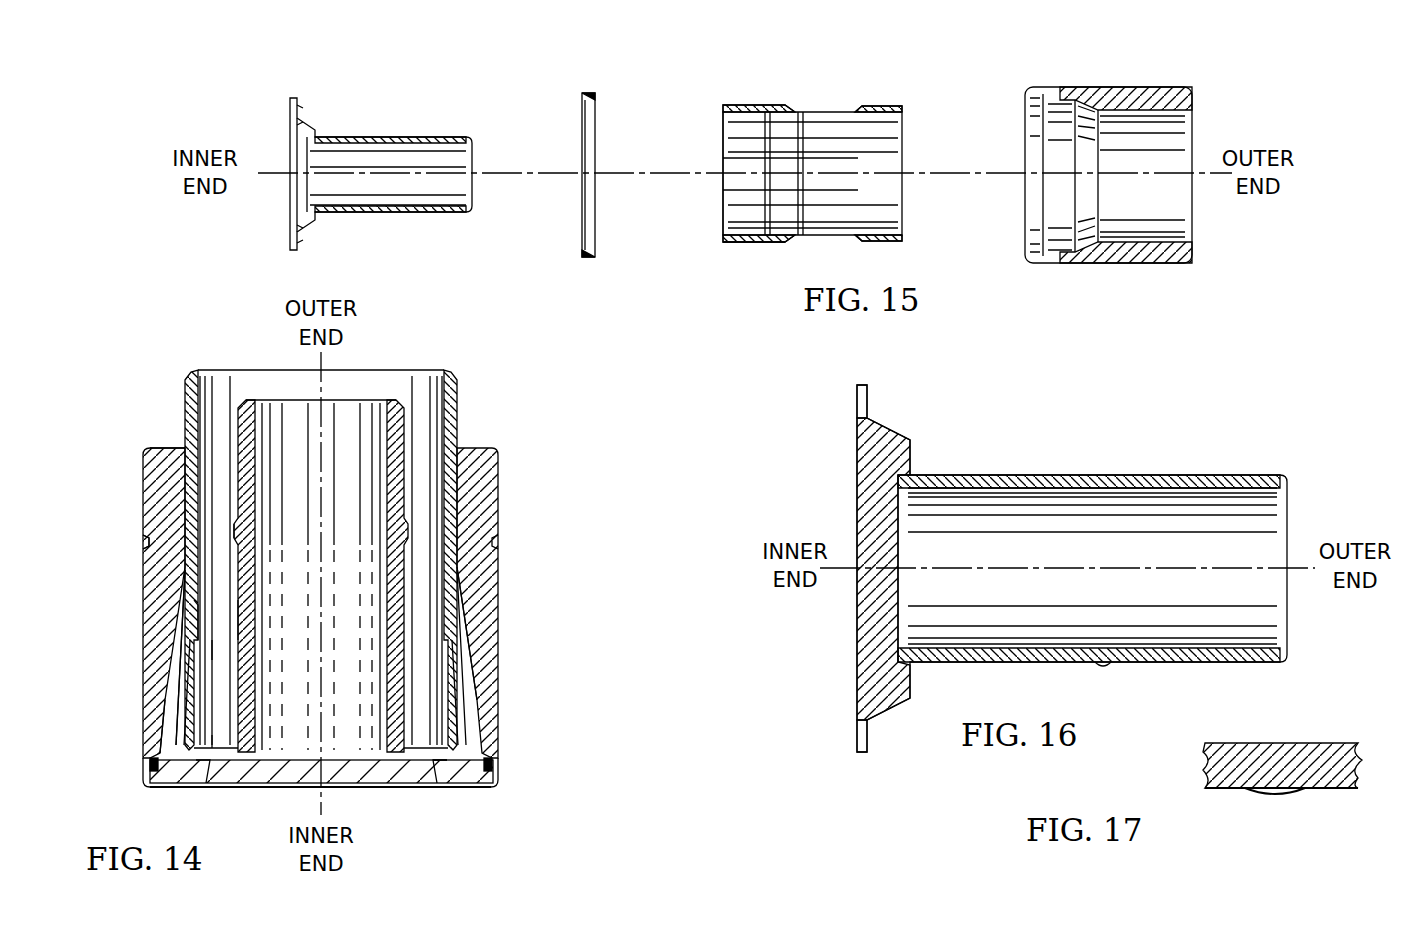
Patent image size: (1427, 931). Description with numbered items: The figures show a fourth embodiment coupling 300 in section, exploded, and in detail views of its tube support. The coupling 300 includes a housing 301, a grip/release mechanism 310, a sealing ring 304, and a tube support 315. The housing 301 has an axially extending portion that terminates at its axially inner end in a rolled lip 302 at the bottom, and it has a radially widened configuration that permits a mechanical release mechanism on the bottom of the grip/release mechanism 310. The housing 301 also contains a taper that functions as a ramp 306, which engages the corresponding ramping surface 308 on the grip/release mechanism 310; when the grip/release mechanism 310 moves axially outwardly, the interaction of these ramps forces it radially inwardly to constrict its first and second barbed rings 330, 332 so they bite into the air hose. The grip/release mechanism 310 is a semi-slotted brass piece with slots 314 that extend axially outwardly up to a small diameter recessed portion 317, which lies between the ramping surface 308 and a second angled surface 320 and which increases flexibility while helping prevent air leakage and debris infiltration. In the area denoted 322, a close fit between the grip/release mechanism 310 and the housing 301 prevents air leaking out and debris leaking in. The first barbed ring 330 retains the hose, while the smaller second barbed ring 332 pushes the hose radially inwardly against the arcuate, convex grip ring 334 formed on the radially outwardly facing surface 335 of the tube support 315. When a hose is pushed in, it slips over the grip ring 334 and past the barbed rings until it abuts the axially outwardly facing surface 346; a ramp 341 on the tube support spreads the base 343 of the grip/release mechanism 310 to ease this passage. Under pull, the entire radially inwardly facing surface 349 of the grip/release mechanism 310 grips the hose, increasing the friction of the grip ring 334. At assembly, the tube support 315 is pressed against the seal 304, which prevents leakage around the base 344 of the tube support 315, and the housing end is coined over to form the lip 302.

In FIG. 14, the coupling 300 is at (578, 333).
In FIG. 14, the housing 301 is at (484, 453).
In FIG. 15, the housing 301 is at (1128, 283).
In FIG. 14, the rolled lip 302 is at (495, 790).
In FIG. 14, the sealing ring 304 is at (502, 770).
In FIG. 15, the sealing ring 304 is at (590, 95).
In FIG. 14, the ramp 306 is at (170, 665).
In FIG. 14, the ramping surface 308 is at (200, 618).
In FIG. 14, the grip/release mechanism 310 is at (186, 395).
In FIG. 15, the grip/release mechanism 310 is at (878, 76).
In FIG. 15, the slots 314 is at (722, 185).
In FIG. 14, the tube support 315 is at (392, 470).
In FIG. 15, the tube support 315 is at (434, 126).
In FIG. 16, the tube support 315 is at (1239, 456).
In FIG. 14, the recessed portion 317 is at (202, 577).
In FIG. 15, the recessed portion 317 is at (827, 236).
In FIG. 14, the second angled surface 320 is at (155, 530).
In FIG. 14, the close-fit area 322 is at (152, 478).
In FIG. 14, the first barbed ring 330 is at (200, 652).
In FIG. 14, the second barbed ring 332 is at (244, 622).
In FIG. 14, the grip ring 334 is at (240, 527).
In FIG. 16, the grip ring 334 is at (1108, 476).
In FIG. 17, the grip ring 334 is at (1277, 795).
In FIG. 14, the radially outwardly facing surface 335 is at (240, 425).
In FIG. 16, the radially outwardly facing surface 335 is at (988, 477).
In FIG. 17, the radially outwardly facing surface 335 is at (1230, 790).
In FIG. 14, the ramp 341 is at (155, 788).
In FIG. 14, the base 343 is at (466, 686).
In FIG. 14, the base 344 is at (441, 772).
In FIG. 16, the base 344 is at (879, 717).
In FIG. 14, the axially outwardly facing surface 346 is at (214, 740).
In FIG. 14, the radially inwardly facing surface 349 is at (410, 396).